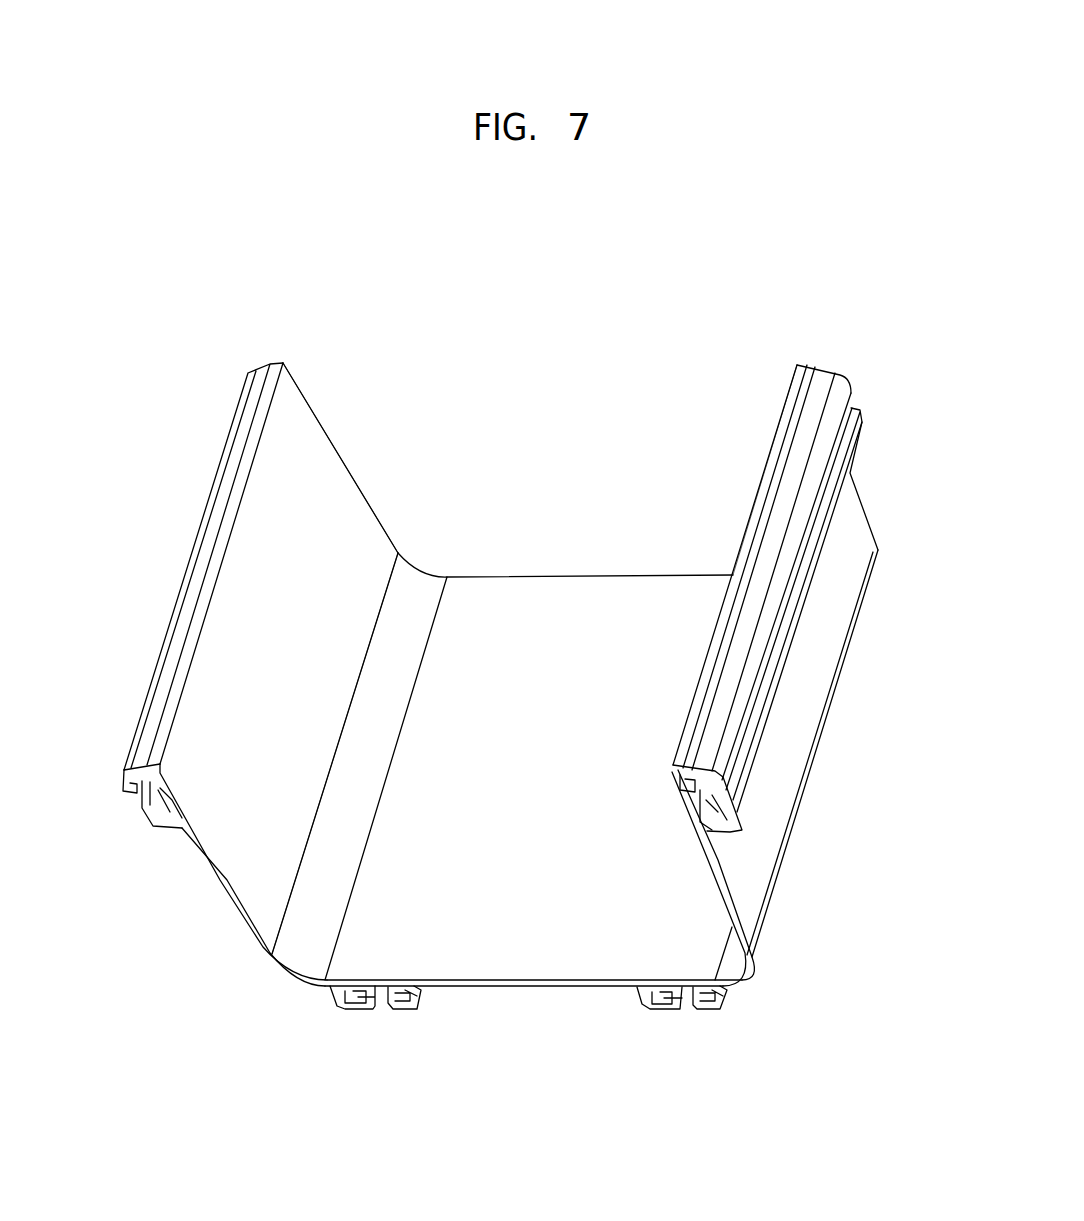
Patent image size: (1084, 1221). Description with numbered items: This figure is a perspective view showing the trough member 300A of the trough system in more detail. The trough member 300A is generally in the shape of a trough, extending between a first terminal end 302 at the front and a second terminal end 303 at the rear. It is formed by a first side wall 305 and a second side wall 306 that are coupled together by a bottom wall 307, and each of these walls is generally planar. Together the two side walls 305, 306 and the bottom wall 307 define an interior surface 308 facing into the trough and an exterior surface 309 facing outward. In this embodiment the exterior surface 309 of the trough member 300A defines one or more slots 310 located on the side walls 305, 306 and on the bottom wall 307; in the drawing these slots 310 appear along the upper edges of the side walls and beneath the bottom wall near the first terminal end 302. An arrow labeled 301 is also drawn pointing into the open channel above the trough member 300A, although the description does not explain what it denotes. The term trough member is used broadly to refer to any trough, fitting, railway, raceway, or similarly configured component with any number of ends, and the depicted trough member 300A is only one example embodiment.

The trough member 300A is at (884, 381).
The channel opening 301 is at (599, 312).
The first terminal end 302 is at (532, 1009).
The second terminal end 303 is at (642, 561).
The first side wall 305 is at (790, 740).
The second side wall 306 is at (293, 453).
The bottom wall 307 is at (585, 754).
The interior surface 308 is at (517, 865).
The exterior surface 309 is at (815, 700).
The slot 310 is at (765, 788).